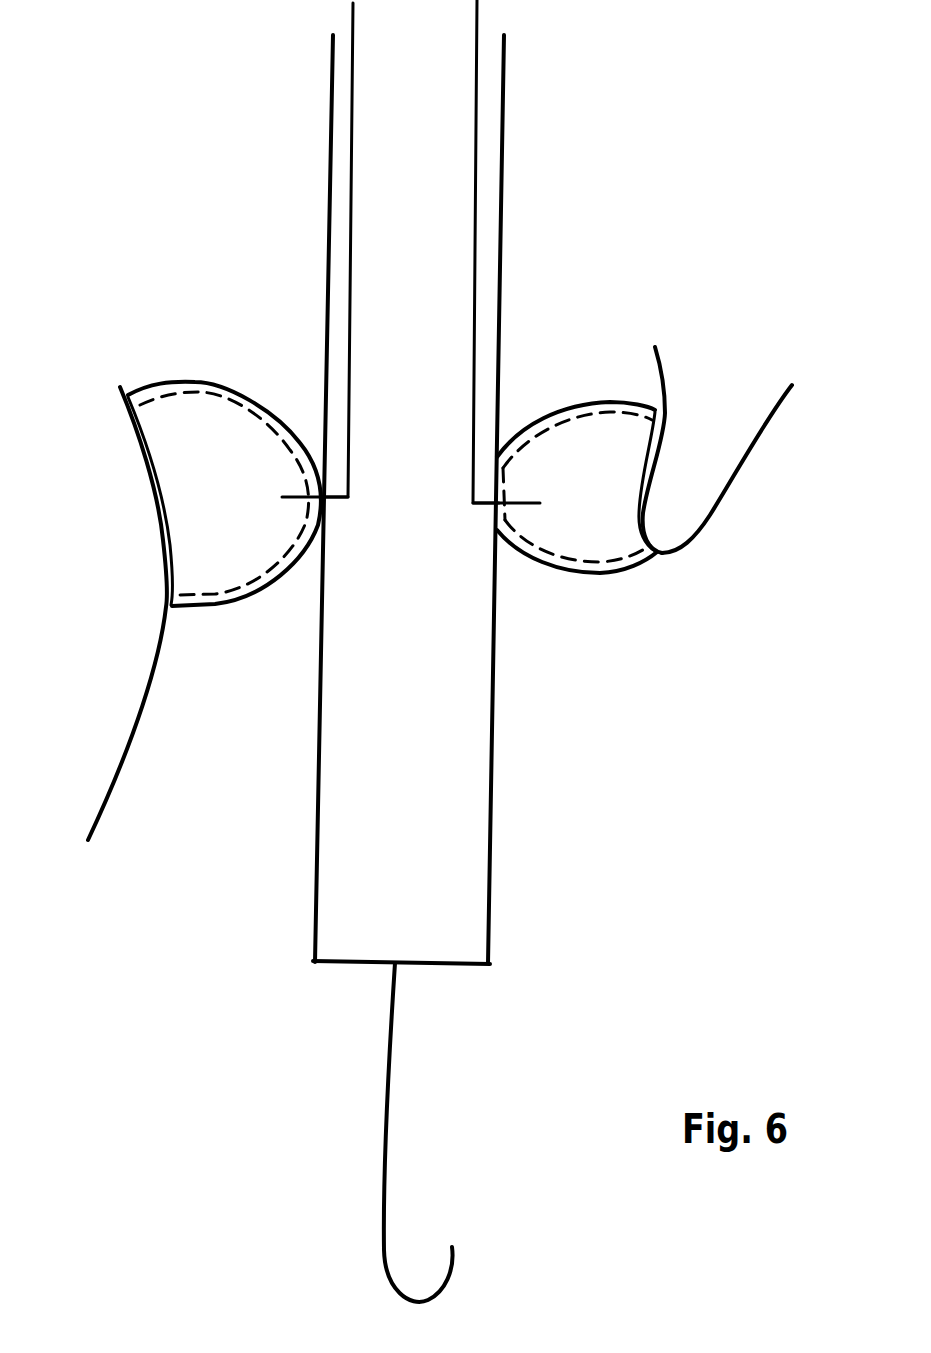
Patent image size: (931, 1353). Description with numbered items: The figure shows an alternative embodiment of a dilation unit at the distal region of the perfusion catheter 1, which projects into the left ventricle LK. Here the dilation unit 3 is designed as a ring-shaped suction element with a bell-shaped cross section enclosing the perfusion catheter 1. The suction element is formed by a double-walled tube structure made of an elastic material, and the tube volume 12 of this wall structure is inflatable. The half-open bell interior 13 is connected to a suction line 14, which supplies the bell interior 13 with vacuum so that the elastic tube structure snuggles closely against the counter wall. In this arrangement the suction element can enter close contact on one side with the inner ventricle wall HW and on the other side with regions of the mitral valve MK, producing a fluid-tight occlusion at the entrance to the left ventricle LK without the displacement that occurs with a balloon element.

The perfusion catheter 1 is at (413, 882).
The suction line 14 is at (343, 302).
The bell interior 13 is at (226, 503).
The dilation unit 3 is at (392, 543).
The tube volume 12 is at (293, 567).
The left ventricle LK is at (245, 555).
The inner ventricle wall HW is at (118, 777).
The mitral valve MK is at (676, 450).